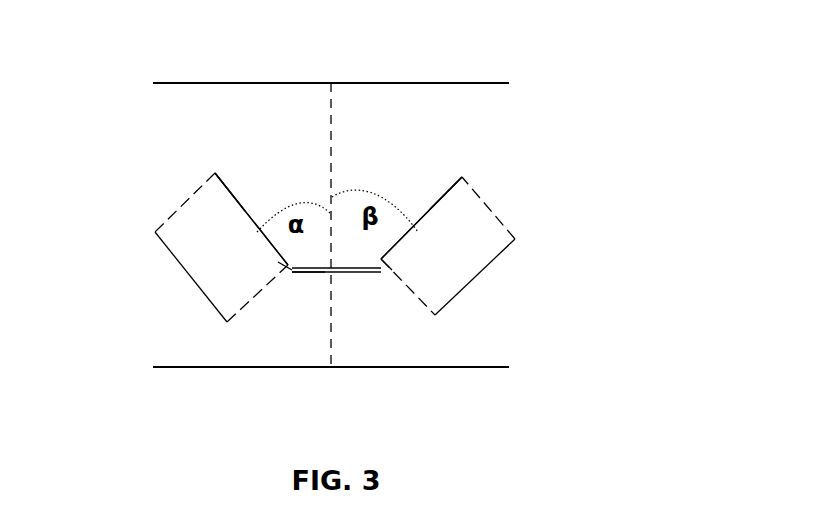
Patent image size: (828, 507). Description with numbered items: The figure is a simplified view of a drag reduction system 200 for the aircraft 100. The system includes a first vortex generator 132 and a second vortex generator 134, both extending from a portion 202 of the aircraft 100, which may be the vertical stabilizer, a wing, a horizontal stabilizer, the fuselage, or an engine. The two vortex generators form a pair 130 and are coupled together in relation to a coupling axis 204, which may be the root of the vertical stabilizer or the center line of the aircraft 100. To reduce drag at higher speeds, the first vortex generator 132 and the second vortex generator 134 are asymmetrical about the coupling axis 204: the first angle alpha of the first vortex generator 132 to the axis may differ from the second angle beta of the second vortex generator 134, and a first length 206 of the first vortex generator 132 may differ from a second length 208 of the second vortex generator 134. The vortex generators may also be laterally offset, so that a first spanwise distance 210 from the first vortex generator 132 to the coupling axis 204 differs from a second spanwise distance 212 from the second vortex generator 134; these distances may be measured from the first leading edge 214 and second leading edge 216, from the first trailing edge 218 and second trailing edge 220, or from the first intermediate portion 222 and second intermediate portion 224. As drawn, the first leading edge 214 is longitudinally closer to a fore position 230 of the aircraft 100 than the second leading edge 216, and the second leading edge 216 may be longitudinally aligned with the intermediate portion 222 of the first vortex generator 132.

The aircraft 100 is at (116, 34).
The drag reduction system 200 is at (101, 148).
The pair 130 is at (158, 209).
The portion of the aircraft 202 is at (247, 80).
The coupling axis 204 is at (332, 132).
The first length 206 is at (215, 247).
The second length 208 is at (478, 279).
The first spanwise distance 210 is at (308, 273).
The second spanwise distance 212 is at (336, 285).
The first leading edge 214 is at (287, 271).
The second leading edge 216 is at (384, 271).
The first trailing edge 218 is at (217, 174).
The second trailing edge 220 is at (462, 176).
The first intermediate portion 222 is at (257, 230).
The second intermediate portion 224 is at (427, 208).
The first vortex generator 132 is at (247, 215).
The second vortex generator 134 is at (420, 219).
The fore position 230 is at (295, 368).